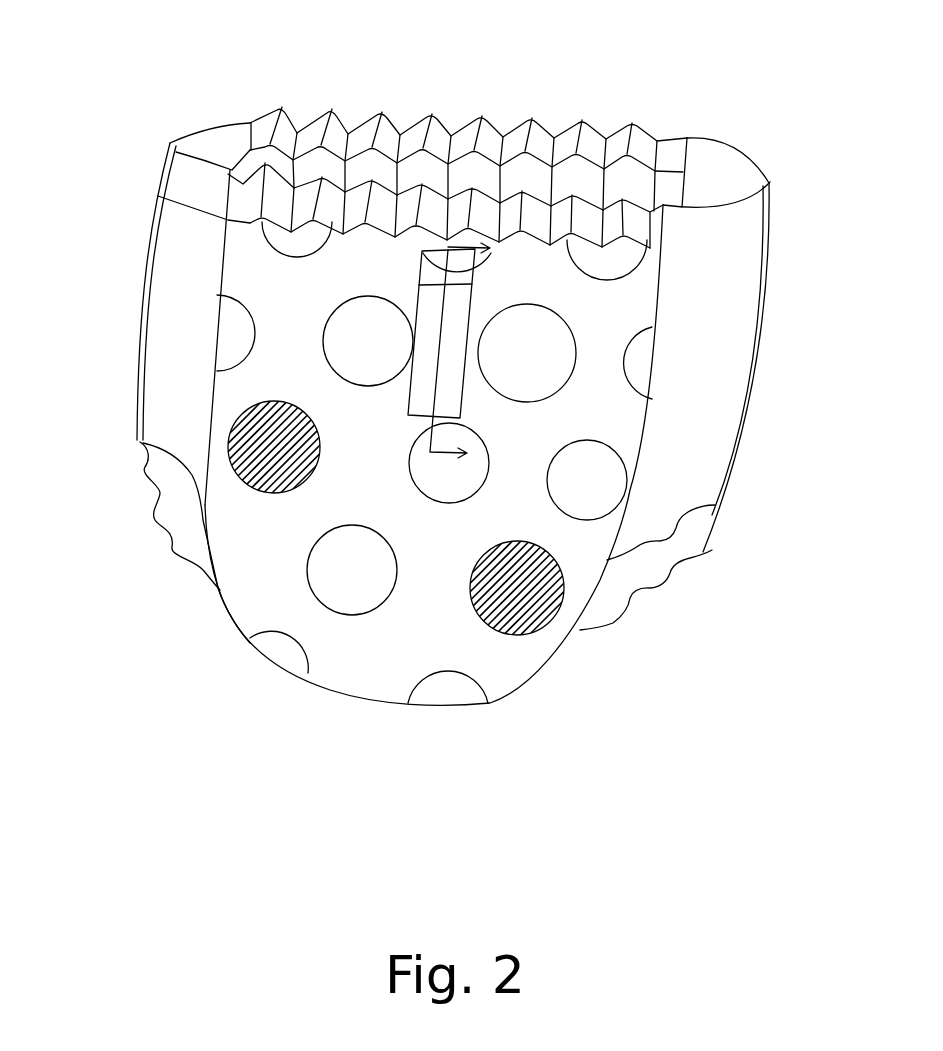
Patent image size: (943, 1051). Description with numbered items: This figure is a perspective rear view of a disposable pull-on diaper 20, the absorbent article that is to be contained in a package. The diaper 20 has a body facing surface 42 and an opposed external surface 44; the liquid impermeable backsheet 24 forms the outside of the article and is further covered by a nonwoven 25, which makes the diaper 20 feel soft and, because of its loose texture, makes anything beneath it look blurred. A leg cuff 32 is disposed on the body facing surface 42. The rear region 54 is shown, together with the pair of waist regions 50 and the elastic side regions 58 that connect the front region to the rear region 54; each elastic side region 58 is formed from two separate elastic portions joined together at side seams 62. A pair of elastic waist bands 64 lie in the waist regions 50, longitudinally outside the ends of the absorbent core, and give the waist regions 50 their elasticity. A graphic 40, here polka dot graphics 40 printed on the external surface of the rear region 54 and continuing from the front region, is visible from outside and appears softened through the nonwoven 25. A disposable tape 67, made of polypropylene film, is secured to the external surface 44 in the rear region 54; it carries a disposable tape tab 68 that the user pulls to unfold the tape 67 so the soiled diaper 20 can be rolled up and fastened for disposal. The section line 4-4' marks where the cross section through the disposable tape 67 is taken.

The pull-on diaper 20 is at (610, 767).
The backsheet 24 is at (446, 466).
The nonwoven 25 is at (513, 673).
The leg cuff 32 is at (267, 117).
The graphic 40 is at (470, 247).
The body facing surface 42 is at (365, 170).
The external surface 44 is at (392, 647).
The waist regions 50 is at (173, 157).
The rear region 54 is at (257, 567).
The elastic side regions 58 is at (177, 317).
The side seams 62 is at (140, 367).
The elastic waist bands 64 is at (418, 140).
The disposable tape 67 is at (450, 403).
The disposable tape tab 68 is at (460, 303).
The section line 4-4' 4 is at (475, 360).